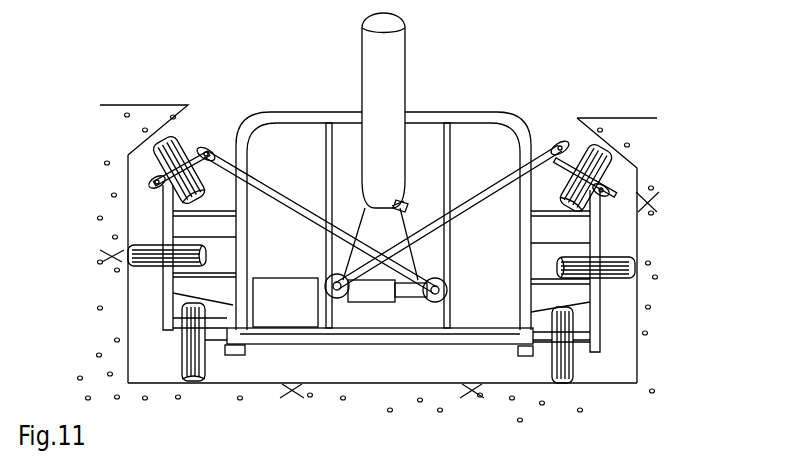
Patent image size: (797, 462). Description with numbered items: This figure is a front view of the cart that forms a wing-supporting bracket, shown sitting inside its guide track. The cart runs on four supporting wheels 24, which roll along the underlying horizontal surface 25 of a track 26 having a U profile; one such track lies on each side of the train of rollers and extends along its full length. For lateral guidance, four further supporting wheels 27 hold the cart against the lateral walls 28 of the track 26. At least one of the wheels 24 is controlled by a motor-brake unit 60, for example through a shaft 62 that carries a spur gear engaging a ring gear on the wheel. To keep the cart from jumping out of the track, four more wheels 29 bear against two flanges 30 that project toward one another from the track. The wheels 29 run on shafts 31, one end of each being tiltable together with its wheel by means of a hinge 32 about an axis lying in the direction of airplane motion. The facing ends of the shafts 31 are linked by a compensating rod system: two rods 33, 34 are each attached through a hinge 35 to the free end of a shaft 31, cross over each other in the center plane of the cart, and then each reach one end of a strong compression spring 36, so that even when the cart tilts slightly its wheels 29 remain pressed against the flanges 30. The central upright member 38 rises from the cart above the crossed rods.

The supporting wheels 24 is at (207, 370).
The horizontal surface 25 is at (322, 386).
The track 26 is at (250, 371).
The supporting wheels 27 is at (639, 258).
The lateral walls 28 is at (126, 302).
The wheels 29 is at (618, 166).
The flanges 30 is at (191, 104).
The shafts 31 is at (190, 147).
The hinge 32 is at (160, 183).
The rod 33 is at (296, 196).
The rod 34 is at (479, 188).
The hinge 35 is at (557, 147).
The compression spring 36 is at (372, 303).
The column 38 is at (408, 56).
The motor-brake unit 60 is at (268, 278).
The shaft 62 is at (218, 318).